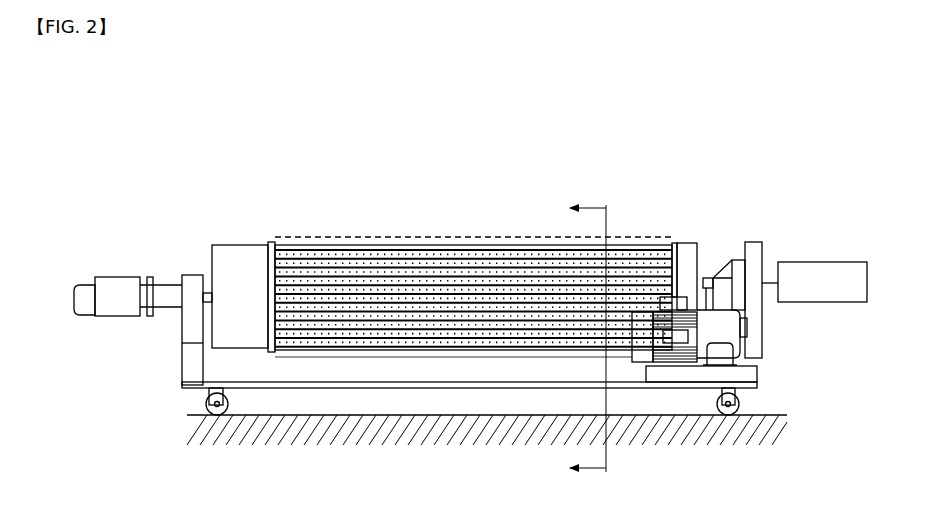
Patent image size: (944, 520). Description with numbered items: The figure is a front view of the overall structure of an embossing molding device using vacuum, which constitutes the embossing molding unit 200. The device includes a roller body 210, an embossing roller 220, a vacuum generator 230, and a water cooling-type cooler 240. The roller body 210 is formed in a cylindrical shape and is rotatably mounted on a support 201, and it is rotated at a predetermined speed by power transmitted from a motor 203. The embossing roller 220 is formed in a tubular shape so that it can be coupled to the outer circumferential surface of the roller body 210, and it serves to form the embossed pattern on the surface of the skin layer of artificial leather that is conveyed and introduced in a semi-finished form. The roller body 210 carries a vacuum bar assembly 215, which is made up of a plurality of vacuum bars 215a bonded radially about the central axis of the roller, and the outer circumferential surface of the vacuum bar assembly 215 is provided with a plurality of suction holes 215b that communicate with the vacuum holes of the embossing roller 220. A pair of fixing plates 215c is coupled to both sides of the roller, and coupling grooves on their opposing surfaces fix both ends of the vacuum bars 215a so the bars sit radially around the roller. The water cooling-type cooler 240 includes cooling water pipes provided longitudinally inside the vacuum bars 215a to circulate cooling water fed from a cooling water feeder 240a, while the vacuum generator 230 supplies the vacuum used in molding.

The embossing molding unit 200 is at (608, 141).
The support 201 is at (185, 366).
The motor 203 is at (735, 313).
The roller body 210 is at (228, 243).
The vacuum bar assembly 215 is at (329, 248).
The vacuum bars 215a is at (532, 272).
The suction holes 215b is at (472, 263).
The fixing plates 215c is at (270, 250).
The embossing roller 220 is at (385, 237).
The vacuum generator 230 is at (805, 262).
The water cooling-type cooler 240 is at (76, 281).
The cooling water feeder 240a is at (123, 277).